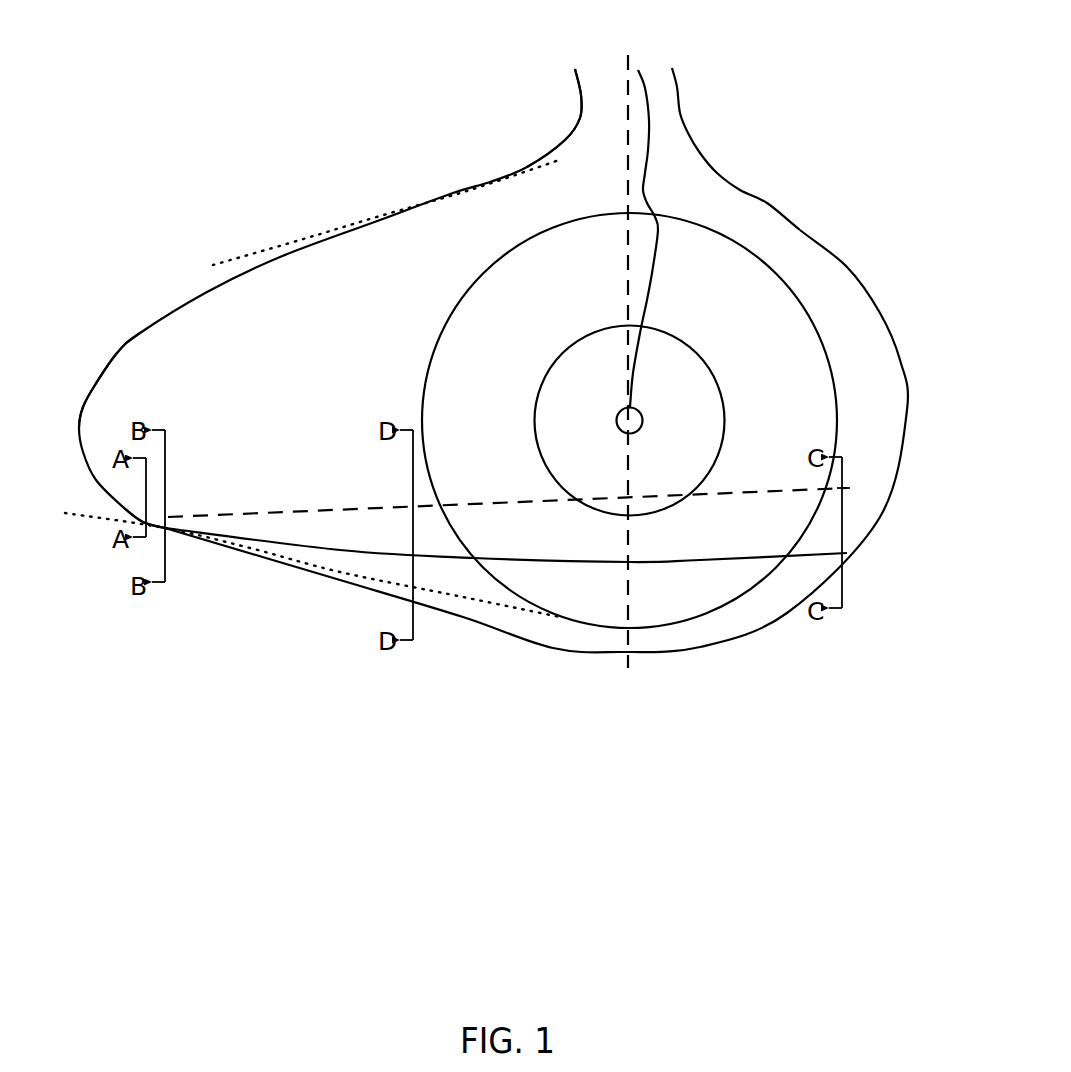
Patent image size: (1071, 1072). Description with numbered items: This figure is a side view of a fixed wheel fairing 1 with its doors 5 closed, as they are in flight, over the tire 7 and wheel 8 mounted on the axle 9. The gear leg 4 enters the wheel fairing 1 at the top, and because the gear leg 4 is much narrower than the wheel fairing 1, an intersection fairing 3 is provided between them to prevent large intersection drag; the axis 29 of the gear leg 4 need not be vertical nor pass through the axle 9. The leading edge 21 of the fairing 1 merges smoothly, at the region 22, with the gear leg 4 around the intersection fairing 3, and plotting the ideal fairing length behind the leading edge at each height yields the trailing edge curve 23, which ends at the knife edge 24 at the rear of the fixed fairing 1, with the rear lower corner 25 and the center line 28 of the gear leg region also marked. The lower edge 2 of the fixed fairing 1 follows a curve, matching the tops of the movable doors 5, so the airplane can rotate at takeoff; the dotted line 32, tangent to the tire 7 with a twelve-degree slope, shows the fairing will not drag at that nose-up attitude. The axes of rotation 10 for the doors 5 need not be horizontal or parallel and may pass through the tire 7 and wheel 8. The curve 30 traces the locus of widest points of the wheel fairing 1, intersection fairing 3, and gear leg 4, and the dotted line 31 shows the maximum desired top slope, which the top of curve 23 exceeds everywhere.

The fixed wheel fairing 1 is at (263, 350).
The lower edge of fixed fairing 2 is at (270, 543).
The intersection fairing 3 is at (598, 154).
The gear leg 4 is at (607, 89).
The wheel fairing doors 5 is at (464, 572).
The tire 7 is at (827, 350).
The wheel 8 is at (683, 343).
The axle 9 is at (641, 413).
The axes of rotation 10 is at (385, 507).
The leading edge 21 is at (877, 517).
The smooth merge of leading edge 22 is at (702, 157).
The trailing edge curve 23 is at (120, 350).
The knife edge 24 is at (143, 523).
The tip edge 25 is at (165, 528).
The center line 28 is at (625, 62).
The axis of gear leg 29 is at (645, 87).
The curve of widest points 30 is at (648, 274).
The dotted slope line 31 is at (248, 253).
The dotted nose-up line 32 is at (98, 522).